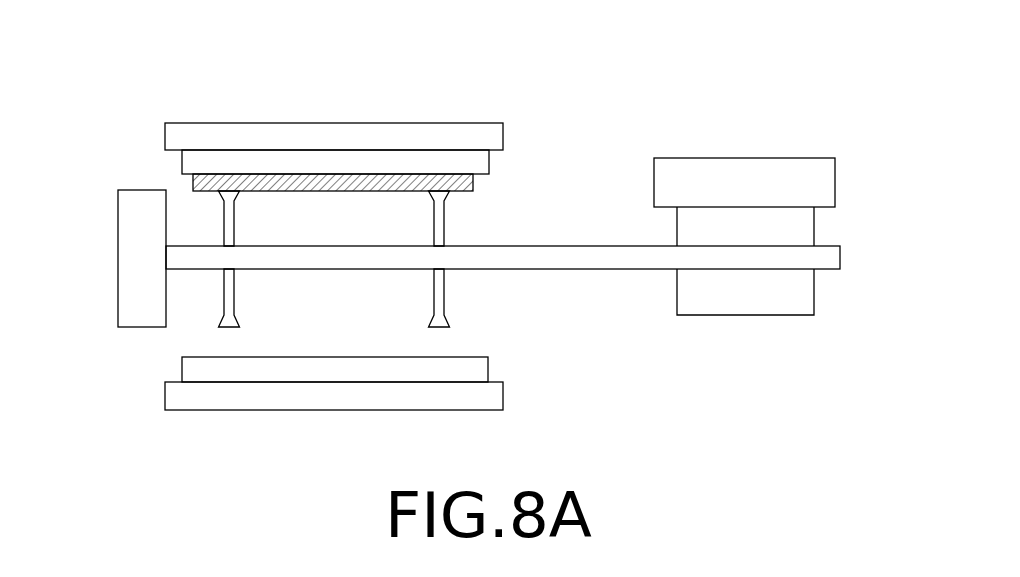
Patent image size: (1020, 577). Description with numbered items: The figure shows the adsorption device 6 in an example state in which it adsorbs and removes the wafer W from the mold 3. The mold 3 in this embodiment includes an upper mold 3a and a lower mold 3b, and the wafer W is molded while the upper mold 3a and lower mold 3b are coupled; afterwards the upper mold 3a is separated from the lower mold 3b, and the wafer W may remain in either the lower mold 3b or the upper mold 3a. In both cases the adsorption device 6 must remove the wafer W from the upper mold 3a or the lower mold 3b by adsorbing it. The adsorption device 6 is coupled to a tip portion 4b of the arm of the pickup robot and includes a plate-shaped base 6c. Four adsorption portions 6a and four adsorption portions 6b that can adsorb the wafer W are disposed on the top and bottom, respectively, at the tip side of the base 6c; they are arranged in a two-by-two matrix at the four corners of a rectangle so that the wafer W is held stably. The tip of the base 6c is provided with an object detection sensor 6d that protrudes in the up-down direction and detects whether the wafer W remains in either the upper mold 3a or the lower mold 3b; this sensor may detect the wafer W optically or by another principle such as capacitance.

The mold 3 is at (312, 211).
The upper mold 3a is at (181, 165).
The lower mold 3b is at (181, 358).
The wafer W is at (474, 185).
The tip portion 4b is at (836, 183).
The adsorption device 6 is at (436, 294).
The adsorption portion 6a is at (237, 228).
The adsorption portion 6b is at (237, 300).
The base 6c is at (588, 270).
The object detection sensor 6d is at (118, 220).